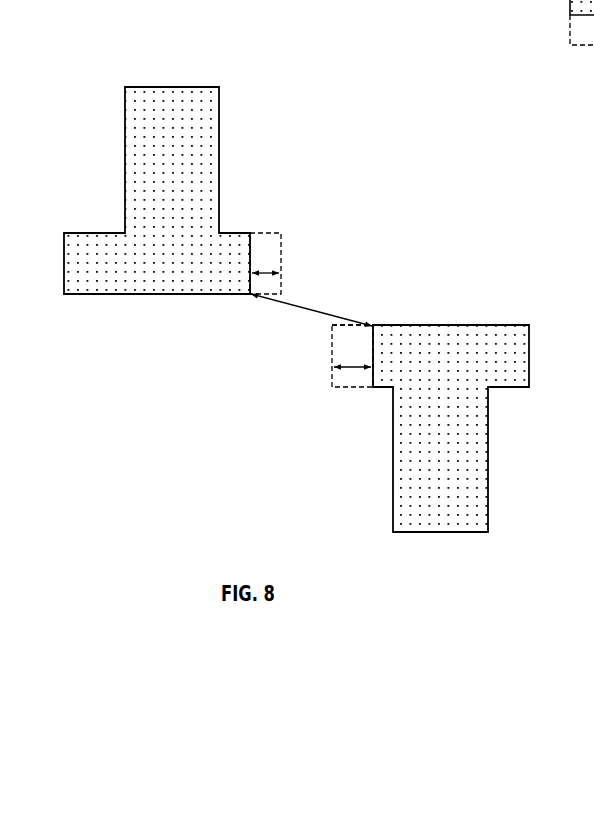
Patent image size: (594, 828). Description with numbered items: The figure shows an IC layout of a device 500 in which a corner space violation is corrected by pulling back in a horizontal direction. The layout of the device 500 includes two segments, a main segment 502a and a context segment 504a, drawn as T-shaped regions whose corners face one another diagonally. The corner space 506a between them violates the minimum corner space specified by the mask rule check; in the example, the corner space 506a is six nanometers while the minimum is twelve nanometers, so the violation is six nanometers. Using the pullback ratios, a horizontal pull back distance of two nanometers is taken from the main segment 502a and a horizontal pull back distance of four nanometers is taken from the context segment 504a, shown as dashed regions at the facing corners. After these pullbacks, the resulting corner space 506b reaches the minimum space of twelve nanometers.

The device 500 is at (386, 88).
The main segment 502a is at (219, 140).
The context segment 504a is at (488, 438).
The corner space 506a is at (311, 317).
The corner space 506b is at (290, 297).